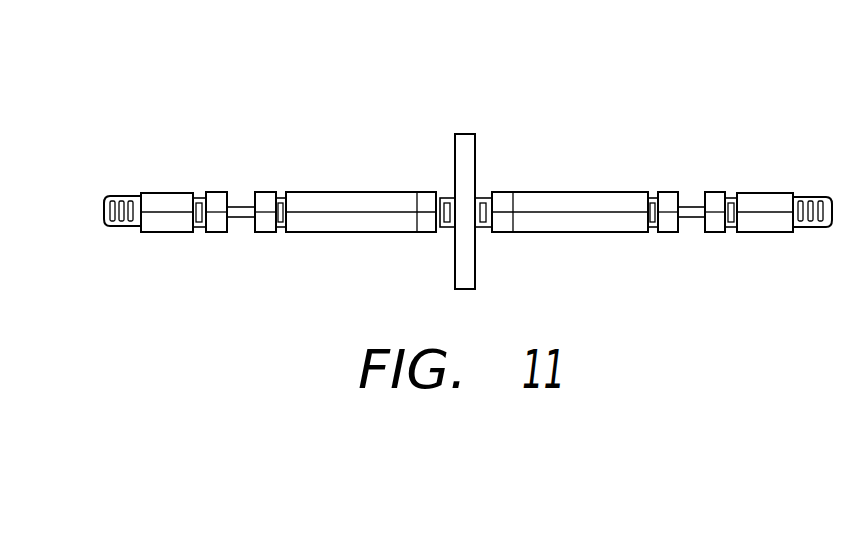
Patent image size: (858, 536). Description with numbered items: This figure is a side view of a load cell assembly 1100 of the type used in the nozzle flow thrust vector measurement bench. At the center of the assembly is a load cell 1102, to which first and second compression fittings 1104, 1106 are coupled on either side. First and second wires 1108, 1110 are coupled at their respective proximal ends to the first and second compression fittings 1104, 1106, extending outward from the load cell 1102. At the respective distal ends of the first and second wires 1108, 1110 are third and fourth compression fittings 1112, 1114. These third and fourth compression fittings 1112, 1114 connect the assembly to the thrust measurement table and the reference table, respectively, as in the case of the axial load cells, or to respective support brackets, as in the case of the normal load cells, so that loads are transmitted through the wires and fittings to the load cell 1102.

The load cell assembly 1100 is at (468, 180).
The load cell 1102 is at (455, 148).
The first compression fitting 1104 is at (378, 192).
The second compression fitting 1106 is at (580, 192).
The first wire 1108 is at (240, 207).
The second wire 1110 is at (688, 207).
The third compression fitting 1112 is at (172, 232).
The fourth compression fitting 1114 is at (770, 232).